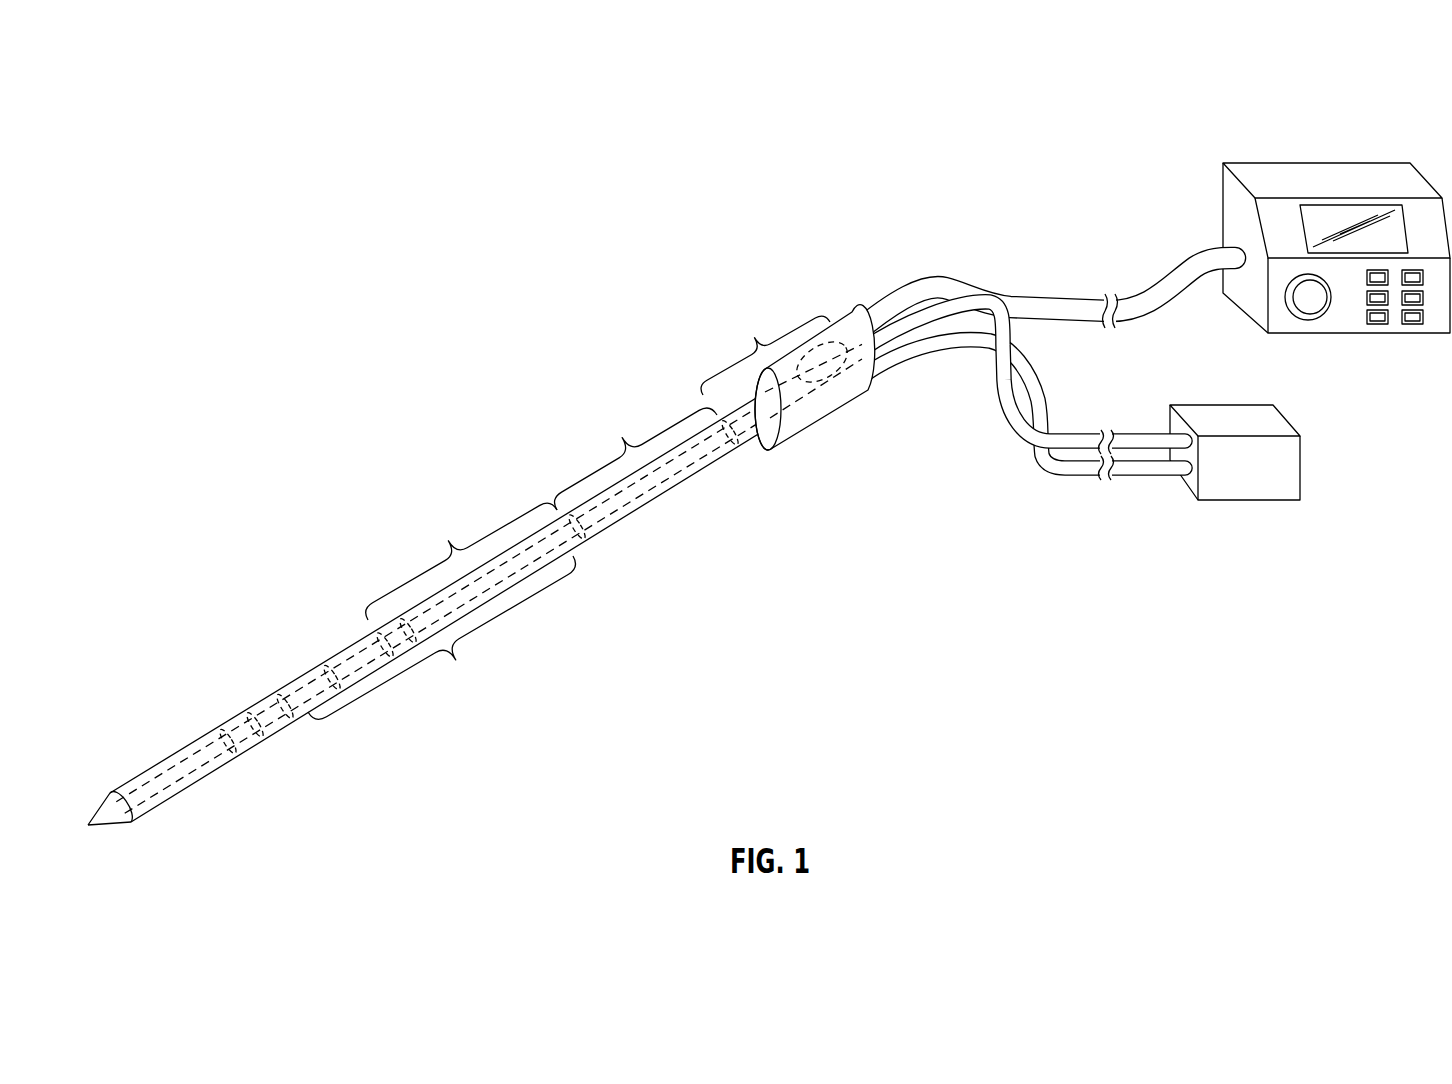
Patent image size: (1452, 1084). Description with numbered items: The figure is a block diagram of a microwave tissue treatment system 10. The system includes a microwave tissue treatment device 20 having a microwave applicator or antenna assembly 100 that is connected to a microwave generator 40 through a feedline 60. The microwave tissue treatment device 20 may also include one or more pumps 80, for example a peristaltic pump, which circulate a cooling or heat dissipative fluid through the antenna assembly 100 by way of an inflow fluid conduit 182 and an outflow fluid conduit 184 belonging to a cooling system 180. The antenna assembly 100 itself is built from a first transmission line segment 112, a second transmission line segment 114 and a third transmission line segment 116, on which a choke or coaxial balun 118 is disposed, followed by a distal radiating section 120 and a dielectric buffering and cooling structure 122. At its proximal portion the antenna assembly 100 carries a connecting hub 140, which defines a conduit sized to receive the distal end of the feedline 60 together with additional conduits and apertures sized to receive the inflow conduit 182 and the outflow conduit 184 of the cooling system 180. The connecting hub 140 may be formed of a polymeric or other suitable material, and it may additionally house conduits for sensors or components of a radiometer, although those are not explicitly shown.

The microwave tissue treatment system 10 is at (720, 232).
The microwave tissue treatment device 20 is at (851, 287).
The microwave generator 40 is at (1330, 162).
The feedline 60 is at (1034, 262).
The pump 80 is at (1230, 404).
The antenna assembly 100 is at (548, 470).
The first transmission line segment 112 is at (765, 348).
The second transmission line segment 114 is at (636, 457).
The third transmission line segment 116 is at (442, 637).
The choke or coaxial balun 118 is at (461, 561).
The distal radiating section 120 is at (262, 698).
The dielectric buffering and cooling structure 122 is at (158, 763).
The connecting hub 140 is at (836, 418).
The cooling system 180 is at (1040, 339).
The inflow fluid conduit 182 is at (920, 363).
The outflow fluid conduit 184 is at (883, 300).